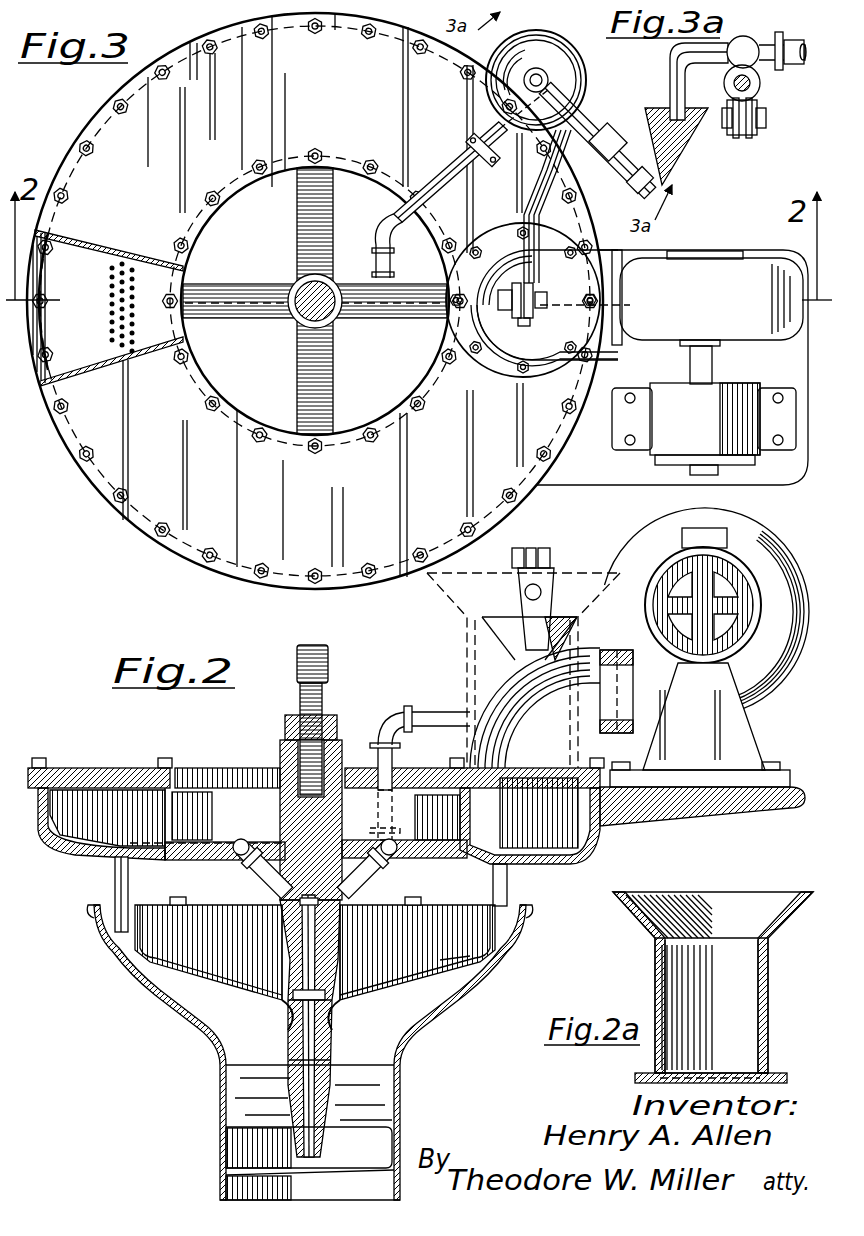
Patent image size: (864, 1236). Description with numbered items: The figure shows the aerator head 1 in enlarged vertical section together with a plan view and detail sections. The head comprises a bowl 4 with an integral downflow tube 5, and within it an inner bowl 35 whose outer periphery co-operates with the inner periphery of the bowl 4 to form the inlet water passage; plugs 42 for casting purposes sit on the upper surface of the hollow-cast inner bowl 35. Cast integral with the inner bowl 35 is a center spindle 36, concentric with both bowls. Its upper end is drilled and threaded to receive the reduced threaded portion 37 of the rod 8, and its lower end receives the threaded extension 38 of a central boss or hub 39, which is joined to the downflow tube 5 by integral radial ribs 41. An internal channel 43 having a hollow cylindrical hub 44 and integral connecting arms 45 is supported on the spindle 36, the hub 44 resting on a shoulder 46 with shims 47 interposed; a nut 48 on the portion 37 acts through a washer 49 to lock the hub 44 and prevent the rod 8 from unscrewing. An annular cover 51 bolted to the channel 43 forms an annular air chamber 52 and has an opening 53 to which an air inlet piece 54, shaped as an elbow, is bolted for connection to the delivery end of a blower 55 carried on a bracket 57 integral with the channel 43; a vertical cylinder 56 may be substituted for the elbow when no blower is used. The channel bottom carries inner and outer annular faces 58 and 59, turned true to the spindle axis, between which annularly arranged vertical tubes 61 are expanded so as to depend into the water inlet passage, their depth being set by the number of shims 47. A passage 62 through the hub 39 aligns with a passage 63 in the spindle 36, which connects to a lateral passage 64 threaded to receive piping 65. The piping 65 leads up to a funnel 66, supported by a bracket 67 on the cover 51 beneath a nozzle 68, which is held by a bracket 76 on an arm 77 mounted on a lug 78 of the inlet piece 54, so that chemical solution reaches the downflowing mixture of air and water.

In FIG. 3, the aerator head 1 is at (96, 506).
In FIG. 2, the aerator head 1 is at (140, 1008).
In FIG. 2, the bowl 4 is at (455, 995).
In FIG. 2, the downflow tube 5 is at (400, 1120).
In FIG. 2, the rod 8 is at (328, 656).
In FIG. 2, the inner bowl 35 is at (450, 960).
In FIG. 2, the center spindle 36 is at (333, 950).
In FIG. 2, the reduced threaded portion 37 is at (300, 703).
In FIG. 2, the threaded extension 38 is at (335, 1022).
In FIG. 2, the central boss or hub 39 is at (333, 1060).
In FIG. 2, the radial ribs 41 is at (262, 1118).
In FIG. 2, the plugs 42 is at (315, 948).
In FIG. 3, the internal channel 43 is at (93, 262).
In FIG. 2, the internal channel 43 is at (538, 852).
In FIG. 2, the hollow cylindrical hub 44 is at (283, 812).
In FIG. 3, the connecting arms 45 is at (296, 352).
In FIG. 2, the connecting arms 45 is at (197, 775).
In FIG. 2, the shoulder 46 is at (260, 858).
In FIG. 2, the shims 47 is at (283, 838).
In FIG. 2, the nut 48 is at (337, 722).
In FIG. 2, the washer 49 is at (284, 745).
In FIG. 3, the annular cover 51 is at (315, 299).
In FIG. 2, the annular cover 51 is at (112, 768).
In FIG. 3, the annular air chamber 52 is at (62, 352).
In FIG. 2, the annular air chamber 52 is at (80, 835).
In FIG. 2, the opening 53 is at (530, 768).
In FIG. 2, the air inlet piece 54 is at (492, 690).
In FIG. 3, the blower 55 is at (718, 272).
In FIG. 2, the blower 55 is at (655, 535).
In FIG. 2A, the vertical cylinder 56 is at (656, 985).
In FIG. 3, the bracket 57 is at (765, 478).
In FIG. 2, the bracket 57 is at (685, 805).
In FIG. 3, the inner annular face 58 is at (112, 305).
In FIG. 2, the inner annular face 58 is at (125, 853).
In FIG. 2, the outer annular face 59 is at (110, 858).
In FIG. 2, the tubes 61 is at (130, 882).
In FIG. 2, the passage 62 is at (318, 1130).
In FIG. 2, the passage 63 is at (284, 964).
In FIG. 2, the lateral passage 64 is at (345, 916).
In FIG. 2, the piping 65 is at (372, 862).
In FIG. 2, the funnel 66 is at (498, 633).
In FIG. 3, the bracket 67 is at (482, 150).
In FIG. 3A, the nozzle 68 is at (672, 62).
In FIG. 3A, the bracket 76 is at (760, 90).
In FIG. 3, the arm 77 is at (560, 218).
In FIG. 2, the lug 78 is at (545, 608).